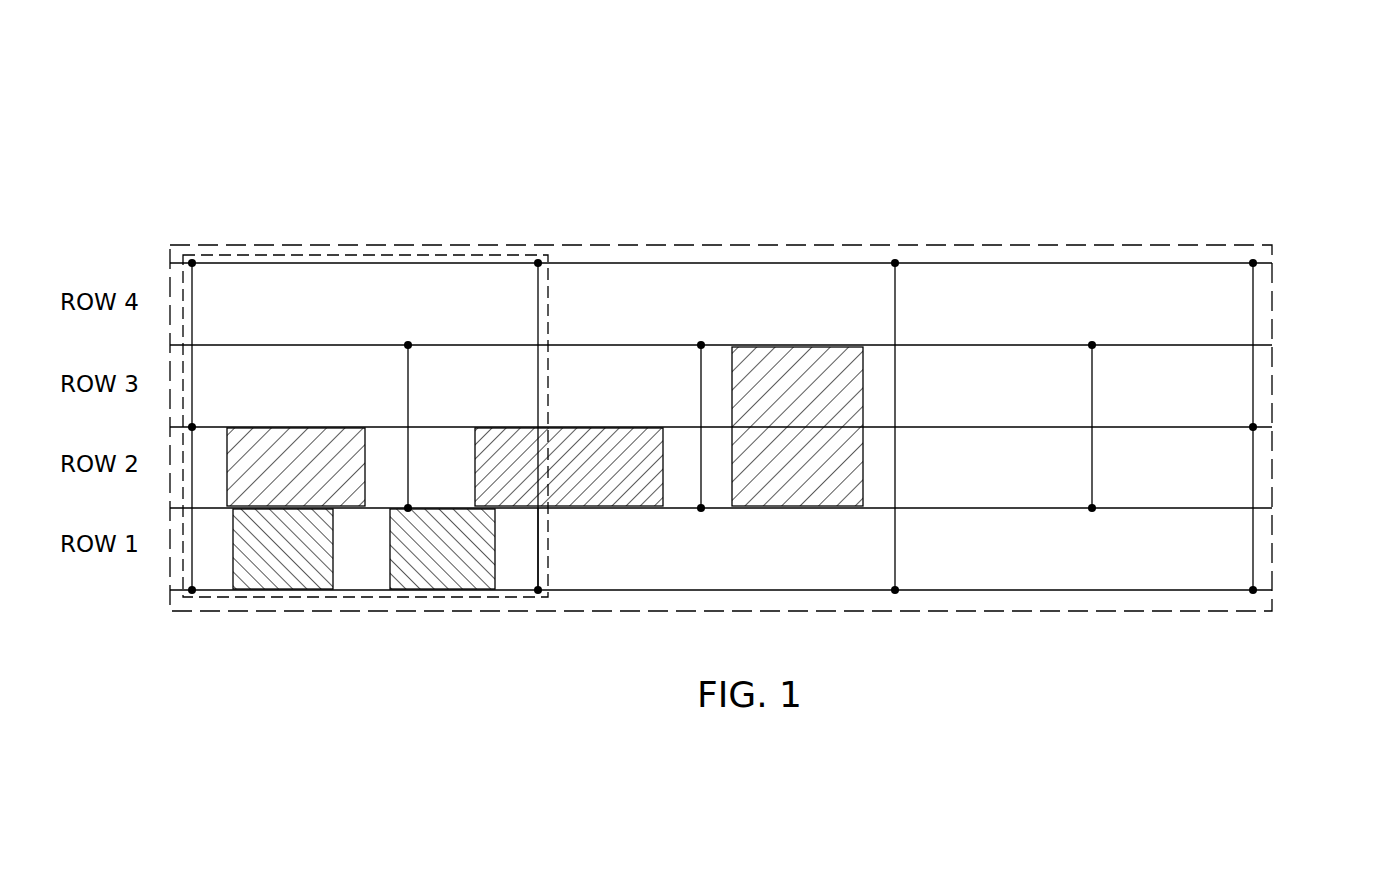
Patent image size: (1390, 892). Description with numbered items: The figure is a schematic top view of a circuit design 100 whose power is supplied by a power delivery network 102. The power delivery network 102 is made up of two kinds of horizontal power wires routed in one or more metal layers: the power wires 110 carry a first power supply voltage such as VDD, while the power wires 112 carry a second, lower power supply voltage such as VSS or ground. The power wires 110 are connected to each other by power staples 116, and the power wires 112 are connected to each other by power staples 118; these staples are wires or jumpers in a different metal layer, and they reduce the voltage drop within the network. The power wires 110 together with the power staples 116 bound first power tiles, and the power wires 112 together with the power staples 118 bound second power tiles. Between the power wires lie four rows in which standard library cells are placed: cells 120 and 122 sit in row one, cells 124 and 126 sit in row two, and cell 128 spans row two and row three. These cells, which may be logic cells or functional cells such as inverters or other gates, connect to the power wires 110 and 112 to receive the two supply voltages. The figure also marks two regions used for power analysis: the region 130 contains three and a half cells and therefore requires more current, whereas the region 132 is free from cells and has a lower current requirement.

The circuit design 100 is at (1106, 88).
The power delivery network 102 is at (1158, 243).
The power wires 110 is at (1297, 265).
The power wires 112 is at (1297, 347).
The power staples 116 is at (193, 298).
The power staples 118 is at (408, 378).
The cell 120 is at (302, 562).
The cell 122 is at (460, 562).
The cell 124 is at (315, 482).
The cell 126 is at (608, 481).
The cell 128 is at (818, 438).
The region 130 is at (540, 597).
The region 132 is at (466, 255).